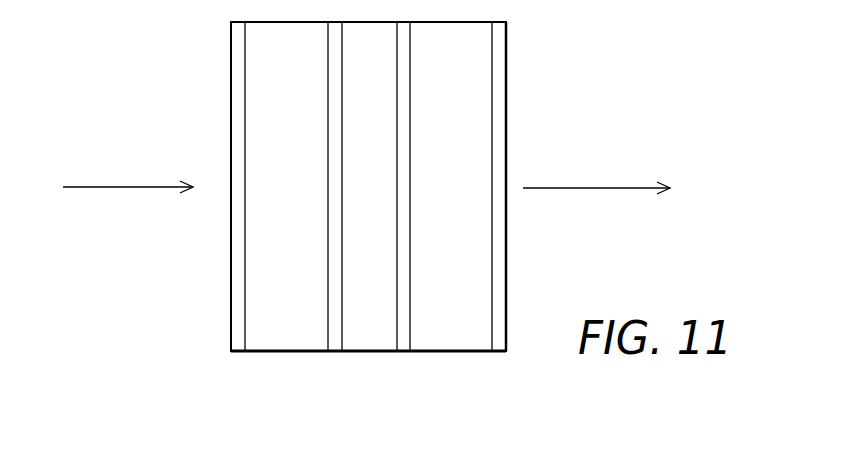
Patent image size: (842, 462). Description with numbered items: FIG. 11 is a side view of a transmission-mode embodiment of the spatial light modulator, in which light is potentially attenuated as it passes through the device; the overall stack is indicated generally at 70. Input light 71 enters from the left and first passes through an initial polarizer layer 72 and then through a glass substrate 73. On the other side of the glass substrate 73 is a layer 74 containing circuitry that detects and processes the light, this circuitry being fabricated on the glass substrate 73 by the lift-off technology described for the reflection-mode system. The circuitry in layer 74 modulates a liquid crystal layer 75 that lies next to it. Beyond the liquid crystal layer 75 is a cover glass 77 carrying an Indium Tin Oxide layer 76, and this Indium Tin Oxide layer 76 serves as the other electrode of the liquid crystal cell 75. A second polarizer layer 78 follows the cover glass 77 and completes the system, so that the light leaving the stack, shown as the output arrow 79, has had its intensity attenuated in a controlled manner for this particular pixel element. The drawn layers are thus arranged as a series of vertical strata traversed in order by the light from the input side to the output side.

The multilayer optical filter stack 70 is at (205, 60).
The input light 71 is at (130, 187).
The initial polarizer layer 72 is at (238, 316).
The glass substrate 73 is at (296, 238).
The layer 74 is at (293, 337).
The liquid crystal layer 75 is at (372, 327).
The Indium Tin Oxide layer 76 is at (402, 72).
The cover glass 77 is at (438, 332).
The second polarizer layer 78 is at (497, 96).
The transmitted light 79 is at (598, 188).